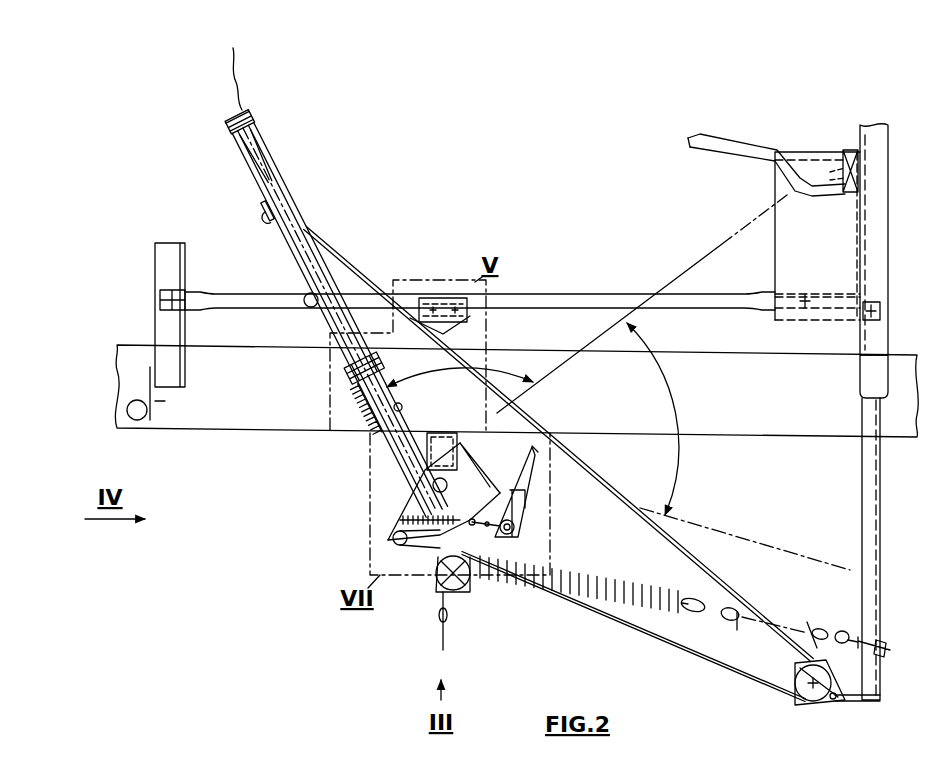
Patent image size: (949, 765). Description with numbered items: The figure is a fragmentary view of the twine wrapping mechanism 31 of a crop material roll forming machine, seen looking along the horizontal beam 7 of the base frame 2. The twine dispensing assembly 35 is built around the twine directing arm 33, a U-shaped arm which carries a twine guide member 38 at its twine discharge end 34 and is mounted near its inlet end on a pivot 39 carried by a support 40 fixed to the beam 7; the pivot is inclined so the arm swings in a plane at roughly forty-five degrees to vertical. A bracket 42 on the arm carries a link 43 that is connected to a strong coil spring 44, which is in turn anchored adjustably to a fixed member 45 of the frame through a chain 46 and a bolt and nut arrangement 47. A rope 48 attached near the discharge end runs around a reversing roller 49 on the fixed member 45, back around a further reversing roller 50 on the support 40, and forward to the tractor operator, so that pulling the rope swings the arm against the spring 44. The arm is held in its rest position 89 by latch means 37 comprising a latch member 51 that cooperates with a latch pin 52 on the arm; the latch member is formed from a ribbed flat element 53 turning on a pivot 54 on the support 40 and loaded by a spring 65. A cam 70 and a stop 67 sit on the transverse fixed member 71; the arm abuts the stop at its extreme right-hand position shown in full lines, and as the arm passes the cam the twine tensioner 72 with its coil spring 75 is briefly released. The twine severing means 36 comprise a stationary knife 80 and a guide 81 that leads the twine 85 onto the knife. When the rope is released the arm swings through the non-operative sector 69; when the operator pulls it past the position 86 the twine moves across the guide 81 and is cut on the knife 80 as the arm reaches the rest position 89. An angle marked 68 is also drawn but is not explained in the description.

The base frame 2 is at (900, 447).
The horizontal beam 7 is at (230, 430).
The twine wrapping mechanism 31 is at (285, 665).
The twine directing arm 33 is at (322, 253).
The twine discharge end 34 is at (233, 118).
The twine dispensing assembly 35 is at (380, 266).
The twine severing means 36 is at (793, 140).
The latch means 37 is at (540, 465).
The twine guide member 38 is at (251, 113).
The pivot 39 is at (405, 471).
The support 40 is at (402, 486).
The bracket 42 is at (403, 498).
The link 43 is at (427, 548).
The coil spring 44 is at (645, 592).
The fixed member 45 is at (845, 690).
The chain 46 is at (702, 606).
The bolt and nut arrangement 47 is at (862, 640).
The rope 48 is at (724, 588).
The reversing roller 49 is at (800, 665).
The further reversing roller 50 is at (462, 590).
The latch member 51 is at (542, 451).
The latch pin 52 is at (403, 407).
The flat element 53 is at (522, 510).
The pivot 54 is at (515, 535).
The spring 65 is at (468, 519).
The stop 67 is at (305, 306).
The angle 68 is at (492, 368).
The non-operative sector 69 is at (673, 398).
The cam 70 is at (470, 325).
The transverse fixed member 71 is at (522, 295).
The twine tensioner 72 is at (338, 388).
The coil spring 75 is at (378, 404).
The stationary knife 80 is at (860, 178).
The guide 81 is at (735, 152).
The twine 85 is at (236, 70).
The position 86 is at (690, 263).
The rest position 89 is at (798, 556).